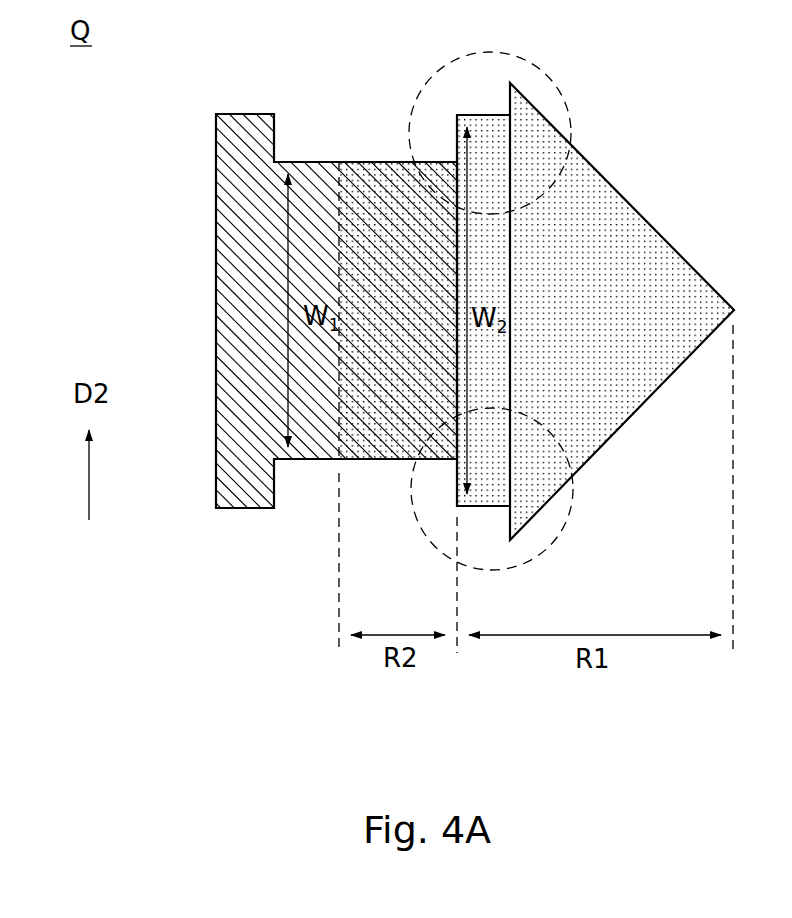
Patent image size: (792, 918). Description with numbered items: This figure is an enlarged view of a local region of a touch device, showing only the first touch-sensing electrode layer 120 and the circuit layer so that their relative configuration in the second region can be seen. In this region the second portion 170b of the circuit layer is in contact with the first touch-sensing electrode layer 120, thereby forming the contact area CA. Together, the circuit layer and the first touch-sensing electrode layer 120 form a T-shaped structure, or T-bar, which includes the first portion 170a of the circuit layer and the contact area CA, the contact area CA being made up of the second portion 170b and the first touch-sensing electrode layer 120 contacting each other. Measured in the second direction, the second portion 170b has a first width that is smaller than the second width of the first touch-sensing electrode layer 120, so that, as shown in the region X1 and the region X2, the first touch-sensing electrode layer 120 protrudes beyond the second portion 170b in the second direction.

The first touch-sensing electrode layer 120 is at (637, 242).
The first portion of the circuit layer 170a is at (317, 447).
The second portion of the circuit layer 170b is at (390, 437).
The contact area CA is at (380, 175).
The region X1 is at (553, 82).
The region X2 is at (550, 545).